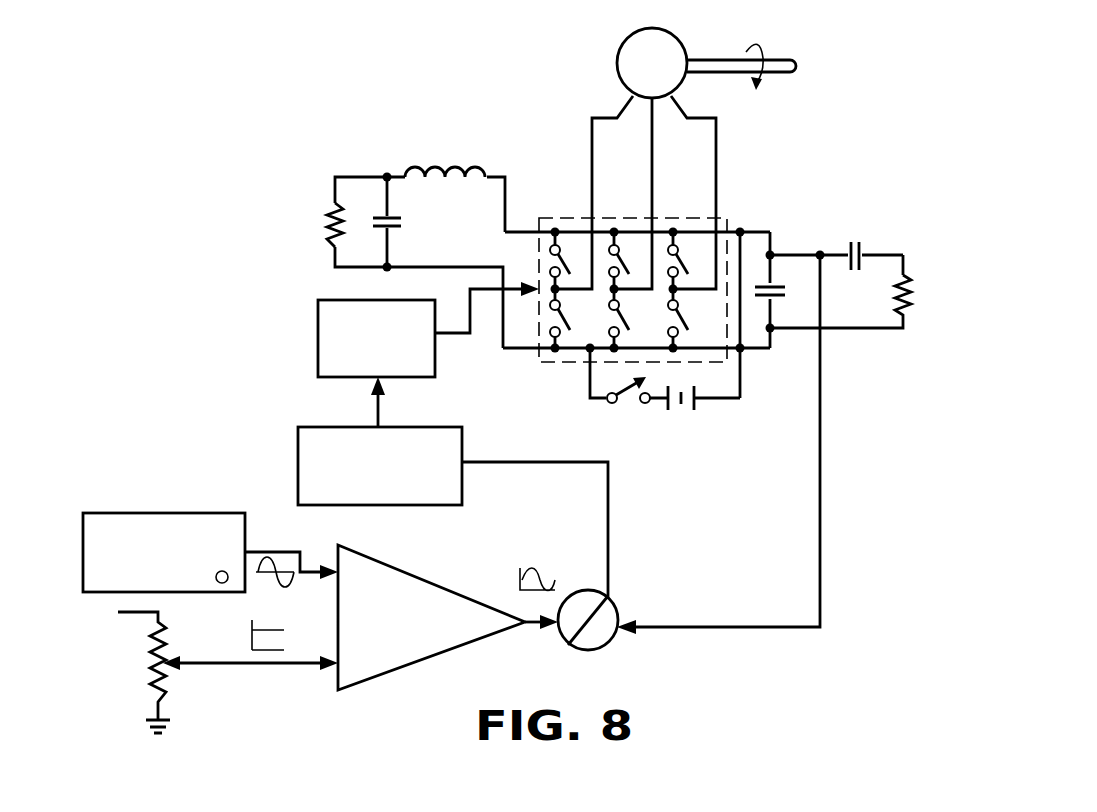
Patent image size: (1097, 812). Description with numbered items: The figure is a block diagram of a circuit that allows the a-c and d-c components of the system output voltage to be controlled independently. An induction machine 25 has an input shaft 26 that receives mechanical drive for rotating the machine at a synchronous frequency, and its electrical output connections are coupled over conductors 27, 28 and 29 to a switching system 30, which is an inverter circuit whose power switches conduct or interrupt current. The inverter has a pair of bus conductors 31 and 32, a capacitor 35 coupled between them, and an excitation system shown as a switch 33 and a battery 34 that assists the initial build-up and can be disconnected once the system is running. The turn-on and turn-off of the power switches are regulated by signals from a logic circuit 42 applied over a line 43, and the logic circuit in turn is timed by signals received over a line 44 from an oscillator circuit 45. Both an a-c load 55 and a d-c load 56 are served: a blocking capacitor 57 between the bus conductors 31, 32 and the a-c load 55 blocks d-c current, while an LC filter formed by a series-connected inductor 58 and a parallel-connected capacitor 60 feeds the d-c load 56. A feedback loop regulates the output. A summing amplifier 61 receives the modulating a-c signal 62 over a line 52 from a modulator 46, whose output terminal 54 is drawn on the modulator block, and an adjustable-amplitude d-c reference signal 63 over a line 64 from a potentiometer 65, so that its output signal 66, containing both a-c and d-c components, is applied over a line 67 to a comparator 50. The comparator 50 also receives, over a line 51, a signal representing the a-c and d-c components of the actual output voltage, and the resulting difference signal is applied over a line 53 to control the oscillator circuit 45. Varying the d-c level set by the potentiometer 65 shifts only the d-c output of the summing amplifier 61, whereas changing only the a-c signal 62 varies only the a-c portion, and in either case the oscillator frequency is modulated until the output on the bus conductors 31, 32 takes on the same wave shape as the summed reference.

The induction machine 25 is at (635, 63).
The input shaft 26 is at (713, 62).
The conductor 27 is at (592, 188).
The conductor 28 is at (652, 188).
The conductor 29 is at (716, 188).
The switching system 30 is at (733, 211).
The bus conductor 31 is at (770, 246).
The bus conductor 32 is at (757, 352).
The switch 33 is at (618, 388).
The battery 34 is at (695, 414).
The capacitor 35 is at (780, 292).
The logic circuit 42 is at (358, 338).
The line 43 is at (455, 338).
The line 44 is at (375, 400).
The oscillator circuit 45 is at (363, 466).
The modulator 46 is at (164, 539).
The comparator 50 is at (588, 634).
The line 51 is at (733, 444).
The line 52 is at (277, 542).
The line 53 is at (551, 530).
The modulator output terminal 54 is at (216, 580).
The a-c load 55 is at (888, 291).
The d-c load 56 is at (363, 262).
The blocking capacitor 57 is at (836, 240).
The inductor 58 is at (455, 189).
The capacitor 60 is at (403, 222).
The summing amplifier 61 is at (410, 668).
The modulating a-c signal 62 is at (275, 581).
The d-c reference signal 63 is at (282, 635).
The line 64 is at (240, 667).
The potentiometer 65 is at (150, 672).
The output signal 66 is at (537, 567).
The line 67 is at (528, 627).